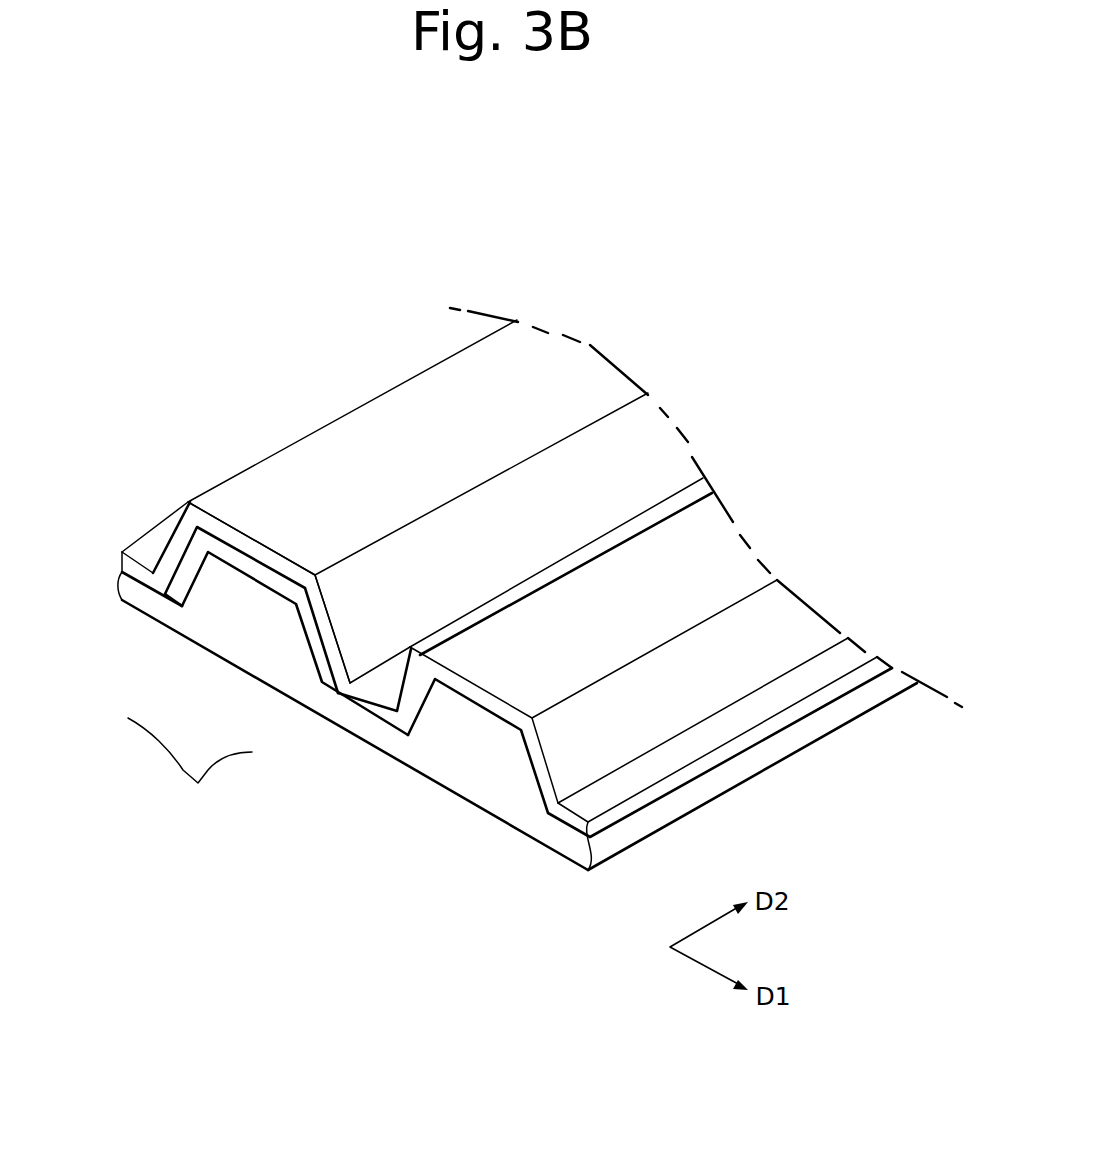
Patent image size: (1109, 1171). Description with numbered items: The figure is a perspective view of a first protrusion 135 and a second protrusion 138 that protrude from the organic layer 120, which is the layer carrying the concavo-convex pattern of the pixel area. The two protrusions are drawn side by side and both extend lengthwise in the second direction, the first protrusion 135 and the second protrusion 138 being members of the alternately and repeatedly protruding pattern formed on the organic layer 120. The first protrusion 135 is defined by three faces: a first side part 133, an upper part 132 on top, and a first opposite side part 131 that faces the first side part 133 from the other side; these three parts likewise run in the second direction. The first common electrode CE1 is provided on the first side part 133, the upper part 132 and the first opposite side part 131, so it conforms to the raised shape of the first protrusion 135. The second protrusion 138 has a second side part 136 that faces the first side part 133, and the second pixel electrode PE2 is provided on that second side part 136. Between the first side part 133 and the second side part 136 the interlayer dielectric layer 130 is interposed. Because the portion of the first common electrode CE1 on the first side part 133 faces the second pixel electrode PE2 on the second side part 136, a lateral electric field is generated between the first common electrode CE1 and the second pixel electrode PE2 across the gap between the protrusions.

The organic layer 120 is at (570, 845).
The interlayer dielectric layer 130 is at (265, 478).
The first opposite side part 131 is at (194, 588).
The upper part 132 is at (248, 580).
The first side part 133 is at (300, 643).
The first protrusion 135 is at (190, 767).
The second side part 136 is at (423, 710).
The second protrusion 138 is at (492, 748).
The first common electrode CE1 is at (192, 566).
The second pixel electrode PE2 is at (397, 692).